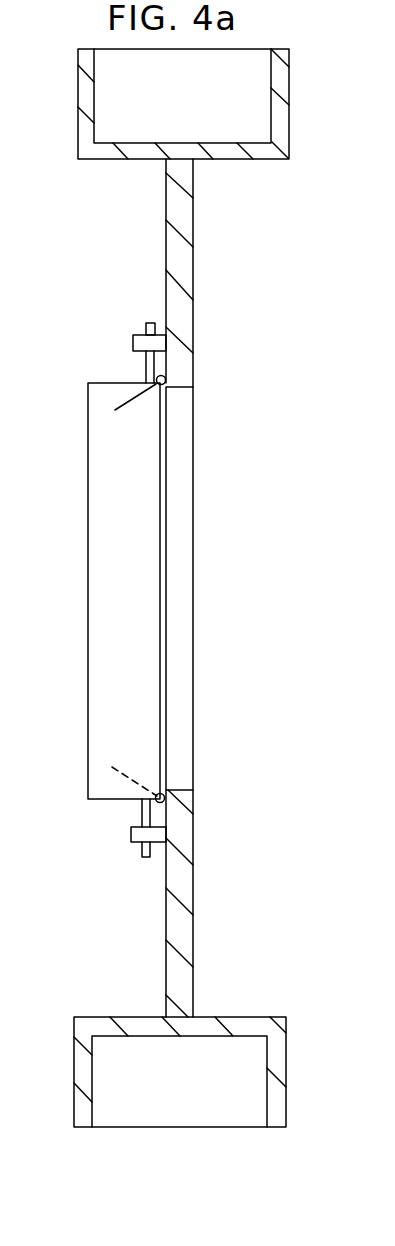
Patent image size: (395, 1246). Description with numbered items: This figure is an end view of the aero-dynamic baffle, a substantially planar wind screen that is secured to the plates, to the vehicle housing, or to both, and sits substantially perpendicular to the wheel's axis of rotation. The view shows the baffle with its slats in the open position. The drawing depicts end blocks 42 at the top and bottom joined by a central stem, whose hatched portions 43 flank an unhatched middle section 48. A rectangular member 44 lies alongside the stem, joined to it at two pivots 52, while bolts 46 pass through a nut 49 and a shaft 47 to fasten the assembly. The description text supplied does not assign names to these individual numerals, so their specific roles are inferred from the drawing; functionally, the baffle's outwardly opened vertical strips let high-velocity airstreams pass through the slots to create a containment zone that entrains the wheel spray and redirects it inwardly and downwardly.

The end block 42 is at (285, 130).
The stem 43 is at (193, 228).
The box 44 is at (100, 430).
The bolt 46 is at (146, 326).
The shaft 47 is at (146, 366).
The stem middle section 48 is at (192, 621).
The nut 49 is at (133, 343).
The pivot 52 is at (151, 390).